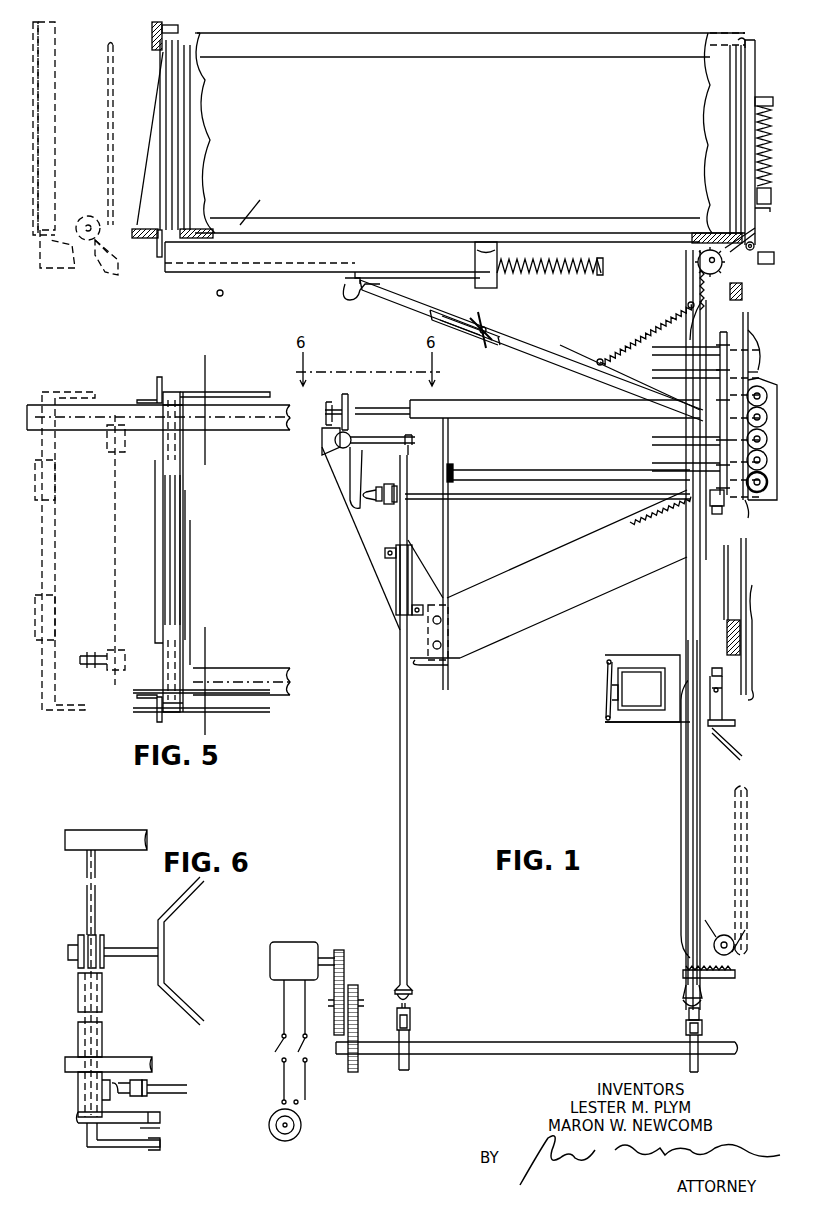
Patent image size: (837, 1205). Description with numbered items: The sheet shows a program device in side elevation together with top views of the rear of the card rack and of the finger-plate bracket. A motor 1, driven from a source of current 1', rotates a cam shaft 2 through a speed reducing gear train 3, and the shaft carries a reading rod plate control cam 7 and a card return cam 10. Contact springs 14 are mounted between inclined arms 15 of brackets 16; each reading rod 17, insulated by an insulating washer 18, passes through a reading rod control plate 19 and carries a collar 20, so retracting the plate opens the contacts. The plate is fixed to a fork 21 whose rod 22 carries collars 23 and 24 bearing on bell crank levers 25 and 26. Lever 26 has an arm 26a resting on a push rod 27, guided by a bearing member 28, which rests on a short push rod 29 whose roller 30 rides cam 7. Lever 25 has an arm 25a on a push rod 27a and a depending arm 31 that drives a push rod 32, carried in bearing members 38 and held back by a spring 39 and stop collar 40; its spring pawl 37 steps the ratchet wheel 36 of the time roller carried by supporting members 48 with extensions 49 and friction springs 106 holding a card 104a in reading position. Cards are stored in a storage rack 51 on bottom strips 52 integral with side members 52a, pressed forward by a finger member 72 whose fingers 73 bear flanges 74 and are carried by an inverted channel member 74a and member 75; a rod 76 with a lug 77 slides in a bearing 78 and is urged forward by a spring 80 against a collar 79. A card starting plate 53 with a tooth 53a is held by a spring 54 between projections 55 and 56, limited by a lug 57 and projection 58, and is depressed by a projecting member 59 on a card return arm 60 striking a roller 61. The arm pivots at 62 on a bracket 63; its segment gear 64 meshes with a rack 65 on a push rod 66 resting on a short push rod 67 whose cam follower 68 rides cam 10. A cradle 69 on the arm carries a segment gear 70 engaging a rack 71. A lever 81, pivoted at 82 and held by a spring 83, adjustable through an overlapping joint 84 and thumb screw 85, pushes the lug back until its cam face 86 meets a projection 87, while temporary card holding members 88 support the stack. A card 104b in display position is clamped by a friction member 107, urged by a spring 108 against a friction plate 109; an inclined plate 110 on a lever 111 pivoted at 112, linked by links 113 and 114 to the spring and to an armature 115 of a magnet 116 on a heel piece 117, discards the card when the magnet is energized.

In FIG. 1, the motor 1 is at (302, 1011).
In FIG. 1, the source of current 1' is at (298, 1125).
In FIG. 1, the cam shaft 2 is at (515, 1042).
In FIG. 1, the speed reducing gear train 3 is at (358, 990).
In FIG. 1, the reading rod plate control cam 7 is at (398, 1065).
In FIG. 5, the reading rod plate control cam 7 is at (192, 370).
In FIG. 1, the card return cam 10 is at (698, 1040).
In FIG. 1, the contact springs 14 is at (448, 540).
In FIG. 1, the inclined arms 15 is at (605, 583).
In FIG. 1, the brackets 16 is at (373, 565).
In FIG. 6, the brackets 16 is at (125, 830).
In FIG. 1, the reading rod 17 is at (545, 470).
In FIG. 1, the insulating washer 18 is at (455, 468).
In FIG. 1, the reading rod control plate 19 is at (710, 312).
In FIG. 1, the collar 20 is at (722, 332).
In FIG. 1, the U-shaped bracket or fork 21 is at (520, 400).
In FIG. 6, the U-shaped bracket or fork 21 is at (195, 895).
In FIG. 1, the rod 22 is at (380, 408).
In FIG. 6, the rod 22 is at (120, 948).
In FIG. 1, the collar 23 is at (346, 394).
In FIG. 6, the collar 23 is at (96, 940).
In FIG. 1, the collar 24 is at (326, 410).
In FIG. 6, the collar 24 is at (78, 950).
In FIG. 1, the bell crank lever 25 is at (370, 437).
In FIG. 6, the bell crank lever 25 is at (102, 1035).
In FIG. 6, the horizontal arm 25a is at (160, 1128).
In FIG. 1, the bell crank lever 26 is at (335, 445).
In FIG. 6, the bell crank lever 26 is at (87, 1135).
In FIG. 1, the horizontally extending arm 26a is at (428, 436).
In FIG. 6, the horizontally extending arm 26a is at (130, 1147).
In FIG. 1, the push rod 27 is at (400, 676).
In FIG. 6, the push rod 27 is at (160, 1148).
In FIG. 6, the push rod 27a is at (160, 1117).
In FIG. 1, the bearing member 28 is at (396, 605).
In FIG. 1, the short push rod 29 is at (410, 1000).
In FIG. 1, the roller 30 is at (410, 1025).
In FIG. 1, the depending arm 31 is at (350, 482).
In FIG. 6, the depending arm 31 is at (106, 1100).
In FIG. 1, the push rod 32 is at (535, 500).
In FIG. 6, the push rod 32 is at (165, 1085).
In FIG. 1, the ratchet wheel 36 is at (768, 488).
In FIG. 1, the spring pawl 37 is at (748, 518).
In FIG. 1, the bearing members 38 is at (716, 512).
In FIG. 6, the bearing members 38 is at (132, 1096).
In FIG. 1, the spring 39 is at (650, 522).
In FIG. 1, the stop collar 40 is at (394, 486).
In FIG. 6, the stop collar 40 is at (145, 1096).
In FIG. 1, the supporting members 48 is at (768, 415).
In FIG. 1, the extension 49 is at (765, 352).
In FIG. 1, the storage rack 51 is at (441, 138).
In FIG. 1, the bottom strips 52 is at (142, 240).
In FIG. 5, the bottom strips 52 is at (236, 430).
In FIG. 1, the side members 52a is at (418, 42).
In FIG. 1, the card starting plate 53 is at (755, 72).
In FIG. 1, the tooth 53a is at (745, 48).
In FIG. 1, the spring 54 is at (772, 150).
In FIG. 1, the projection 55 is at (773, 100).
In FIG. 1, the projection 56 is at (771, 196).
In FIG. 1, the lug 57 is at (770, 215).
In FIG. 1, the projection 58 is at (774, 264).
In FIG. 1, the projecting member 59 is at (738, 254).
In FIG. 1, the card return arm 60 is at (104, 265).
In FIG. 1, the roller 61 is at (754, 244).
In FIG. 1, the pivot 62 is at (698, 270).
In FIG. 1, the bracket 63 is at (742, 290).
In FIG. 1, the segment gear 64 is at (708, 260).
In FIG. 1, the rack 65 is at (700, 290).
In FIG. 1, the push rod 66 is at (687, 925).
In FIG. 1, the short push rod 67 is at (699, 1014).
In FIG. 1, the cam follower 68 is at (686, 1028).
In FIG. 1, the cradle 69 is at (106, 118).
In FIG. 1, the segment gear 70 is at (90, 214).
In FIG. 1, the rack 71 is at (683, 972).
In FIG. 1, the finger member 72 is at (48, 25).
In FIG. 5, the finger member 72 is at (35, 555).
In FIG. 1, the fingers 73 is at (32, 190).
In FIG. 1, the flange 74 is at (42, 237).
In FIG. 1, the inverted channel member 74a is at (268, 208).
In FIG. 1, the member 75 is at (260, 275).
In FIG. 1, the rod 76 is at (395, 272).
In FIG. 1, the lug 77 is at (345, 284).
In FIG. 1, the bearing 78 is at (490, 288).
In FIG. 1, the collar 79 is at (600, 275).
In FIG. 1, the spring 80 is at (548, 273).
In FIG. 1, the lever 81 is at (530, 345).
In FIG. 1, the pivot 82 is at (690, 392).
In FIG. 1, the spring 83 is at (620, 342).
In FIG. 1, the overlapping joint 84 is at (455, 325).
In FIG. 1, the thumb screw 85 is at (478, 340).
In FIG. 1, the cam face 86 is at (350, 300).
In FIG. 1, the projection 87 is at (220, 296).
In FIG. 1, the temporary card holding members 88 is at (157, 256).
In FIG. 5, the temporary card holding members 88 is at (150, 383).
In FIG. 1, the card 104a is at (748, 315).
In FIG. 1, the card 104b is at (746, 552).
In FIG. 1, the friction springs 106 is at (760, 330).
In FIG. 1, the friction member 107 is at (740, 636).
In FIG. 1, the spring 108 is at (724, 585).
In FIG. 1, the friction plate 109 is at (752, 690).
In FIG. 1, the inclined plate 110 is at (728, 745).
In FIG. 1, the lever 111 is at (716, 712).
In FIG. 1, the pivot 112 is at (718, 690).
In FIG. 1, the link 113 is at (718, 668).
In FIG. 1, the link 114 is at (665, 722).
In FIG. 1, the armature 115 is at (606, 690).
In FIG. 1, the magnet 116 is at (641, 689).
In FIG. 1, the heel piece 117 is at (650, 655).